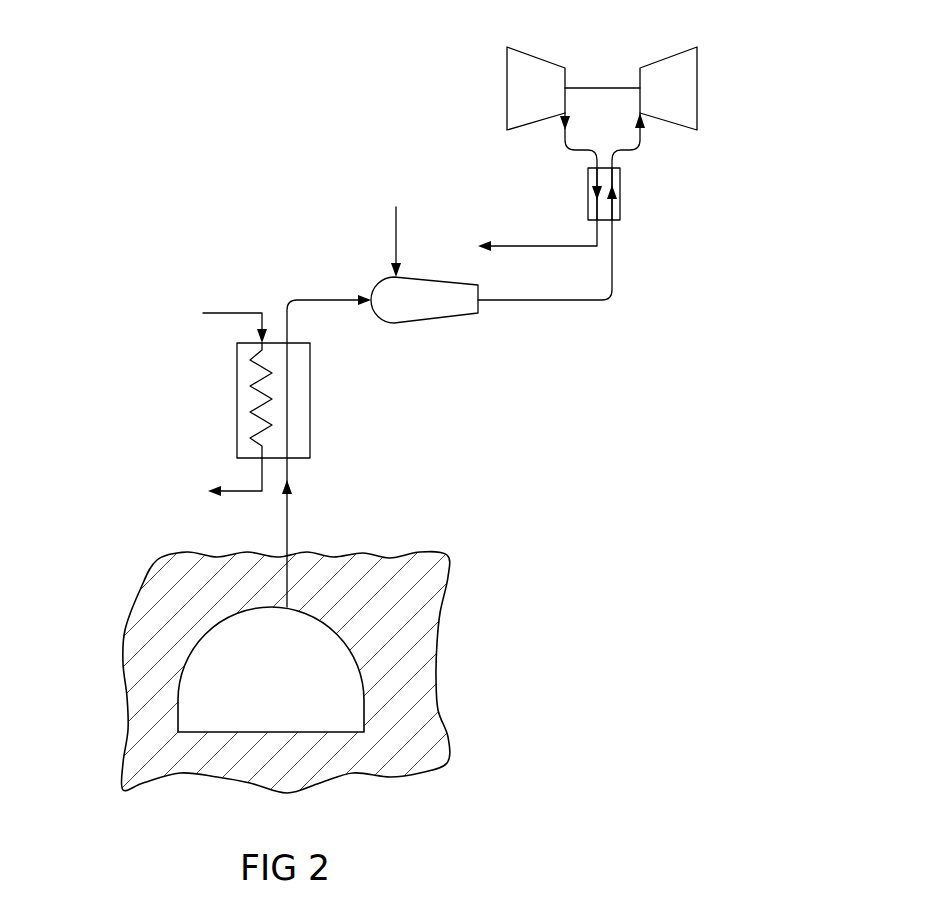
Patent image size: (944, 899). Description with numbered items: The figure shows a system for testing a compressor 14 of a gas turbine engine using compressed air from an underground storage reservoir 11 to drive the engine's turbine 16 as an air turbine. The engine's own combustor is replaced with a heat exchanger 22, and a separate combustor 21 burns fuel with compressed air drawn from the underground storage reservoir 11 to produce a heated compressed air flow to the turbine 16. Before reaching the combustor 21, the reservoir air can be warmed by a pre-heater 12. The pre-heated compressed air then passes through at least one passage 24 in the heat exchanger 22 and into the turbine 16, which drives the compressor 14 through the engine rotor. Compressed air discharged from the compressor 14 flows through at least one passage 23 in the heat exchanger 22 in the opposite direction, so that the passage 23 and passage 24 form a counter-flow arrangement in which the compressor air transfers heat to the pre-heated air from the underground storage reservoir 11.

The underground storage reservoir 11 is at (220, 662).
The pre-heater 12 is at (243, 399).
The compressor 14 is at (528, 75).
The turbine 16 is at (670, 78).
The combustor 21 is at (412, 302).
The heat exchanger 22 is at (617, 207).
The passage 23 is at (598, 212).
The passage 24 is at (608, 173).